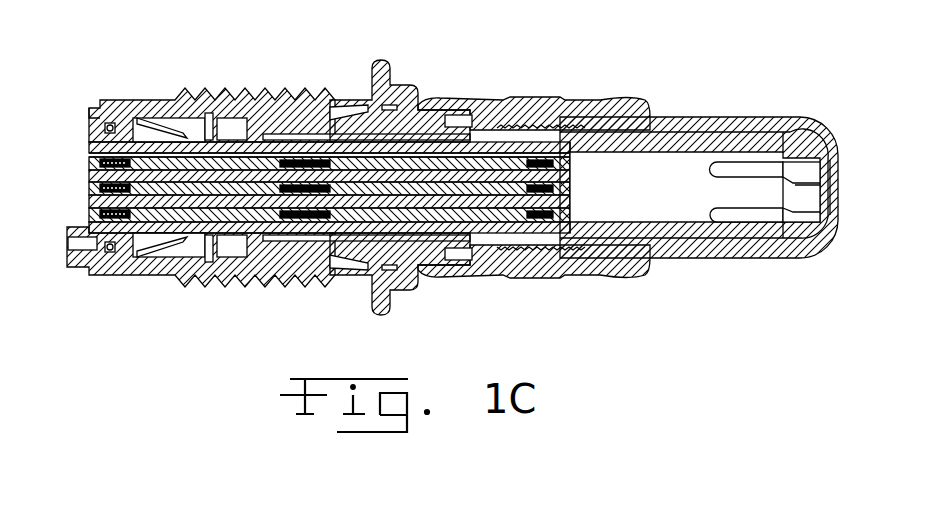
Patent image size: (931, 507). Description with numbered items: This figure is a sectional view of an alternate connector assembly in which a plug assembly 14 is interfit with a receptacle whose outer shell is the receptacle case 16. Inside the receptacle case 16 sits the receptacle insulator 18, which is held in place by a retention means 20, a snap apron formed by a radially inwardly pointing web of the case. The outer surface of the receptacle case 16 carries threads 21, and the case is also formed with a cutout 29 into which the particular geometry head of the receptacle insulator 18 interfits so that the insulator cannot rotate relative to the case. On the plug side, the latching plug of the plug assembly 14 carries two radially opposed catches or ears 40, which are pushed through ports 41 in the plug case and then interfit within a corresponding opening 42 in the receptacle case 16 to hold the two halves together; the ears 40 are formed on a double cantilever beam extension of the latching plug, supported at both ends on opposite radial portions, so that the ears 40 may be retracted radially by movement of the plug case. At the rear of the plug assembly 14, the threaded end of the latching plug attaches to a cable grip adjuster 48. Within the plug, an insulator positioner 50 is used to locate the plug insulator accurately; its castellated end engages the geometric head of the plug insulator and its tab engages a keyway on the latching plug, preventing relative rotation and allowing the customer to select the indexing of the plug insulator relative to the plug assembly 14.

The plug assembly 14 is at (450, 97).
The receptacle case 16 is at (127, 100).
The receptacle insulator 18 is at (88, 145).
The retention means 20 is at (173, 103).
The threads 21 is at (240, 287).
The cutout 29 is at (88, 110).
The ears 40 is at (357, 107).
The ports 41 is at (347, 275).
The opening 42 is at (330, 108).
The cable grip adjuster 48 is at (747, 127).
The insulator positioner 50 is at (693, 233).